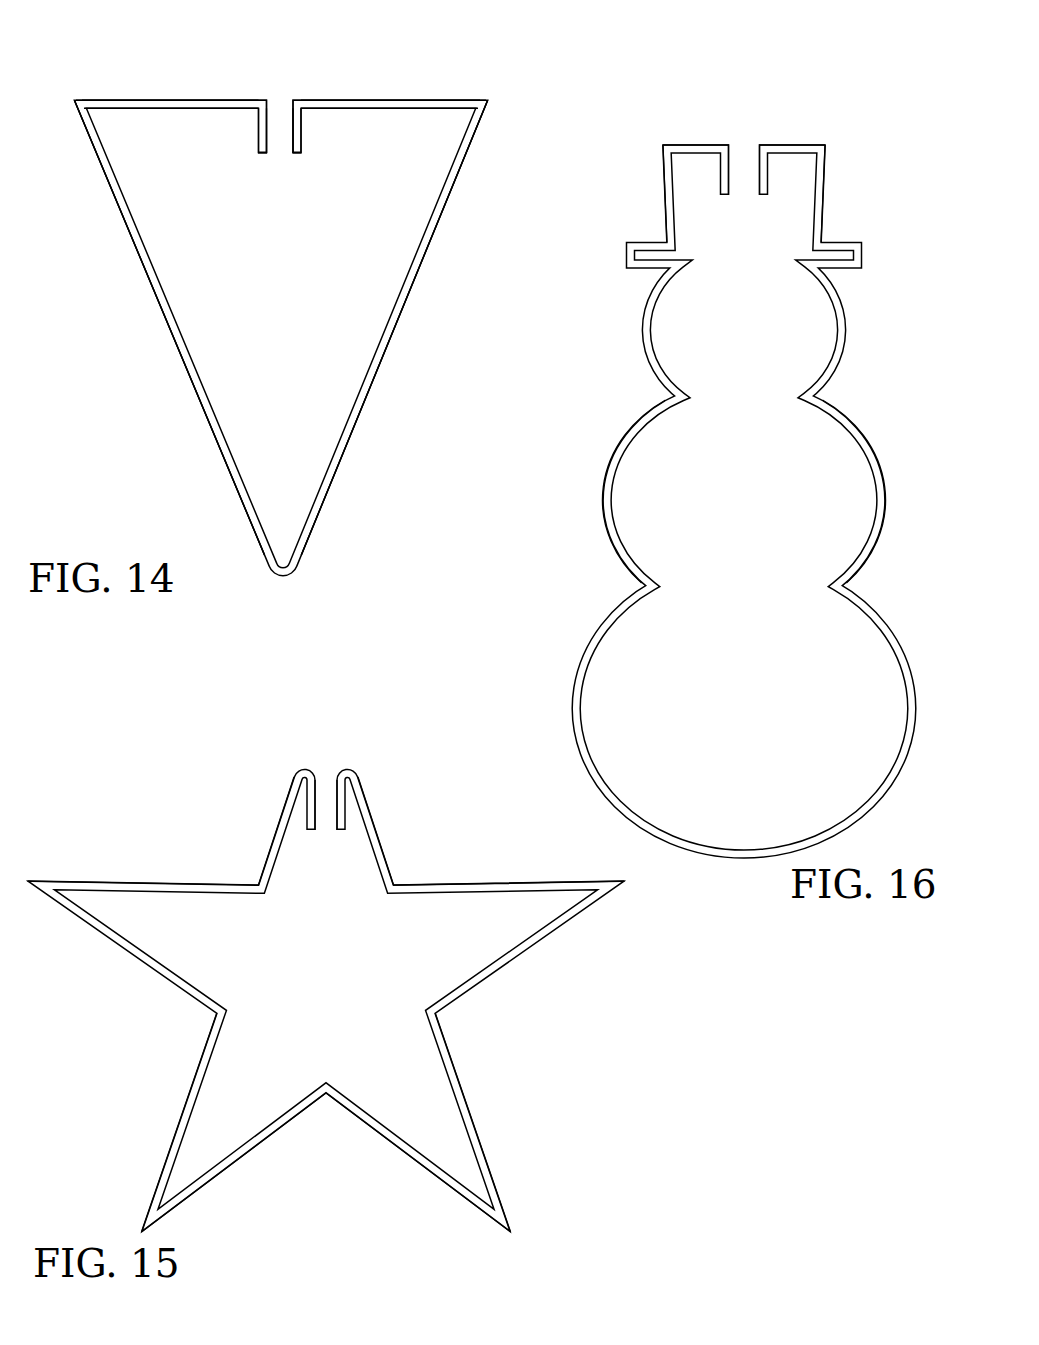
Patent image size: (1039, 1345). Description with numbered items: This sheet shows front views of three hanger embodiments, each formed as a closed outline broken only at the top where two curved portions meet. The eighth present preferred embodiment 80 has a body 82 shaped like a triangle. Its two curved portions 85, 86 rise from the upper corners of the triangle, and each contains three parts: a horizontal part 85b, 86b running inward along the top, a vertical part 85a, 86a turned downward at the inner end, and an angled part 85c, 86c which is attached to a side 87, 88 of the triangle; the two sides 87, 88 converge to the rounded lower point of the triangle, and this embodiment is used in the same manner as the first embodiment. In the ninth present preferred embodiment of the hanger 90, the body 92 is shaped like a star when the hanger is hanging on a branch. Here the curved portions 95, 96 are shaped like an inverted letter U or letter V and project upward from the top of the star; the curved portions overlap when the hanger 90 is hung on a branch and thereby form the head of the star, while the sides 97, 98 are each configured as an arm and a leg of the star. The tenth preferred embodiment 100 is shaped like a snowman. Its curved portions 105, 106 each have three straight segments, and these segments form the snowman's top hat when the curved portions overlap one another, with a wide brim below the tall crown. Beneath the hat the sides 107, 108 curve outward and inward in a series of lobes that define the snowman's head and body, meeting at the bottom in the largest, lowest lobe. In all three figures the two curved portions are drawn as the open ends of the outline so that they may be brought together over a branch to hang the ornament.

In FIG. 14, the eighth present preferred embodiment 80 is at (279, 289).
In FIG. 14, the body 82 is at (391, 345).
In FIG. 14, the curved portion 85 is at (209, 95).
In FIG. 14, the vertical part 85a is at (256, 130).
In FIG. 14, the horizontal part 85b is at (127, 99).
In FIG. 14, the angled part 85c is at (90, 147).
In FIG. 14, the curved portion 86 is at (392, 92).
In FIG. 14, the vertical part 86a is at (302, 130).
In FIG. 14, the horizontal part 86b is at (318, 99).
In FIG. 14, the angled part 86c is at (470, 147).
In FIG. 14, the side 87 is at (212, 433).
In FIG. 14, the side 88 is at (350, 433).
In FIG. 15, the hanger 90 is at (325, 996).
In FIG. 15, the body 92 is at (163, 884).
In FIG. 15, the curved portion 95 is at (281, 800).
In FIG. 15, the curved portion 96 is at (371, 800).
In FIG. 15, the side 97 is at (191, 1088).
In FIG. 15, the side 98 is at (466, 1088).
In FIG. 16, the tenth preferred embodiment 100 is at (744, 449).
In FIG. 16, the curved portion 105 is at (700, 144).
In FIG. 16, the curved portion 106 is at (792, 144).
In FIG. 16, the side 107 is at (629, 425).
In FIG. 16, the side 108 is at (858, 425).